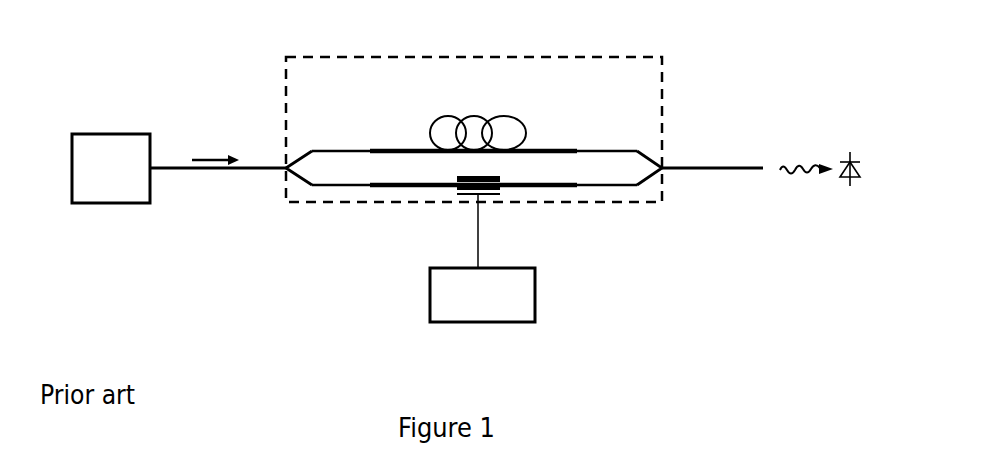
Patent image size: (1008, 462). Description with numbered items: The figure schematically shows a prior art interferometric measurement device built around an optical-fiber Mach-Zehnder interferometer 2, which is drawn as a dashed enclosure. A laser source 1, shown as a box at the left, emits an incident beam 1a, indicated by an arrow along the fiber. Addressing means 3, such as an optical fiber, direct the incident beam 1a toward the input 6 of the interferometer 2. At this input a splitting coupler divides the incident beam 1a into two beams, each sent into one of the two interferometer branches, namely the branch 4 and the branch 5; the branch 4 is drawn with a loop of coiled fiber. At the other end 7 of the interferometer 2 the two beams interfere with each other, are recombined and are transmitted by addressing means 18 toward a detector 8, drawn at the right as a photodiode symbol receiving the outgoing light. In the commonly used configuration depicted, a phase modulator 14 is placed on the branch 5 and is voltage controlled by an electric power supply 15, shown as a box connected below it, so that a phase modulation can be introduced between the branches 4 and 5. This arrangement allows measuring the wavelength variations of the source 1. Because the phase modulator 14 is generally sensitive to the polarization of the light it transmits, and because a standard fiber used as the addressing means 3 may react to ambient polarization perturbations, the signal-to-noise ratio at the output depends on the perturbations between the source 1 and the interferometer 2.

The laser source 1 is at (140, 134).
The incident beam 1a is at (215, 159).
The interferometer 2 is at (662, 97).
The addressing means 3 is at (202, 169).
The branch 4 is at (478, 117).
The branch 5 is at (420, 186).
The input 6 is at (293, 168).
The other end 7 is at (662, 172).
The detector 8 is at (852, 185).
The phase modulator 14 is at (500, 193).
The electric power supply 15 is at (430, 283).
The addressing means 18 is at (722, 168).